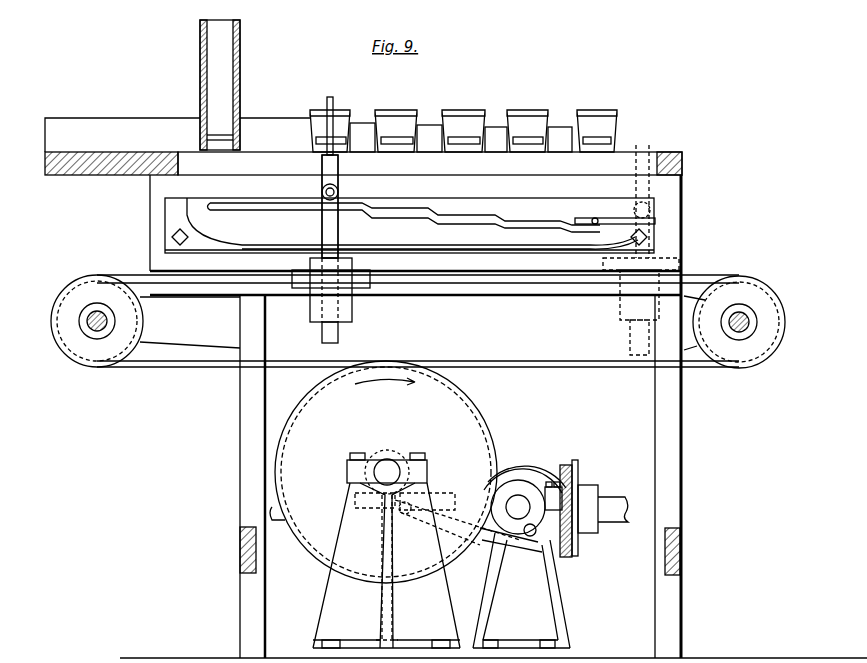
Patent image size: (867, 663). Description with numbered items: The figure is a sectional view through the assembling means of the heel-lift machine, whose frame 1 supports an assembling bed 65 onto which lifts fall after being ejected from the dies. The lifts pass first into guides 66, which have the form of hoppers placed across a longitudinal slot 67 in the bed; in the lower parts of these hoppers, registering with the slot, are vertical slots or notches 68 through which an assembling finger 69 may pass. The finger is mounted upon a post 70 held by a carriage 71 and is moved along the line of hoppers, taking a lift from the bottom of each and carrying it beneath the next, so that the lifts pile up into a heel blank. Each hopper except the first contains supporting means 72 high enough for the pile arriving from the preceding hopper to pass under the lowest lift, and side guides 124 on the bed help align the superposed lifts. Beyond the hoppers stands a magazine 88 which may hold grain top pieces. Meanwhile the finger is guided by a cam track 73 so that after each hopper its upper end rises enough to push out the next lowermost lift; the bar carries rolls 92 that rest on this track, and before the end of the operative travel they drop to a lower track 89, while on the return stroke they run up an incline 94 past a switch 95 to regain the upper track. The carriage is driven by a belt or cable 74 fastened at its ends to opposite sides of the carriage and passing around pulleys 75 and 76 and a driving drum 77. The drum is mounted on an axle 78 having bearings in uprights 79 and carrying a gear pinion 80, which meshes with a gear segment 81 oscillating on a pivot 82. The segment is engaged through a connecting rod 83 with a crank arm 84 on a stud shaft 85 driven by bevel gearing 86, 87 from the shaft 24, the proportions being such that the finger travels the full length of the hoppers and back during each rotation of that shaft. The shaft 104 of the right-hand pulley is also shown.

The frame 1 is at (240, 448).
The shaft 24 is at (616, 500).
The assembling bed 65 is at (110, 175).
The guides 66 is at (308, 110).
The longitudinal slot 67 is at (618, 154).
The vertical slots or notches 68 is at (378, 136).
The assembling finger 69 is at (331, 128).
The post 70 is at (338, 233).
The carriage 71 is at (355, 272).
The supporting means 72 is at (460, 136).
The cam track 73 is at (476, 211).
The belt or cable 74 is at (472, 361).
The pulley 75 is at (140, 322).
The pulley 76 is at (748, 357).
The driving drum 77 is at (478, 412).
The axle 78 is at (392, 466).
The uprights 79 is at (342, 548).
The gear pinion 80 is at (378, 452).
The gear segment 81 is at (436, 504).
The pivot 82 is at (395, 630).
The connecting rod 83 is at (488, 545).
The crank arm 84 is at (530, 553).
The stud shaft 85 is at (519, 495).
The bevel gear 86 is at (545, 465).
The bevel gear 87 is at (578, 465).
The magazine 88 is at (241, 44).
The lower track 89 is at (275, 248).
The rolls 92 is at (338, 192).
The incline 94 is at (655, 238).
The switch 95 is at (605, 216).
The shaft 104 is at (740, 312).
The side guides 124 is at (135, 120).